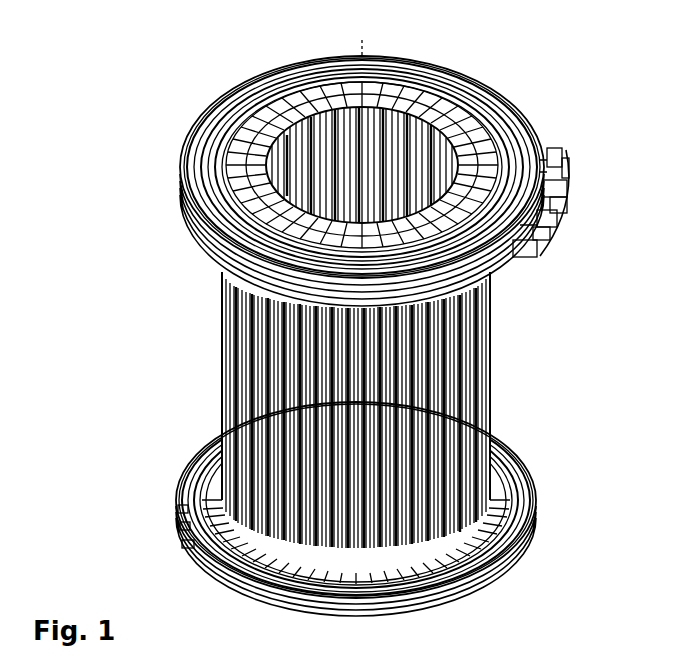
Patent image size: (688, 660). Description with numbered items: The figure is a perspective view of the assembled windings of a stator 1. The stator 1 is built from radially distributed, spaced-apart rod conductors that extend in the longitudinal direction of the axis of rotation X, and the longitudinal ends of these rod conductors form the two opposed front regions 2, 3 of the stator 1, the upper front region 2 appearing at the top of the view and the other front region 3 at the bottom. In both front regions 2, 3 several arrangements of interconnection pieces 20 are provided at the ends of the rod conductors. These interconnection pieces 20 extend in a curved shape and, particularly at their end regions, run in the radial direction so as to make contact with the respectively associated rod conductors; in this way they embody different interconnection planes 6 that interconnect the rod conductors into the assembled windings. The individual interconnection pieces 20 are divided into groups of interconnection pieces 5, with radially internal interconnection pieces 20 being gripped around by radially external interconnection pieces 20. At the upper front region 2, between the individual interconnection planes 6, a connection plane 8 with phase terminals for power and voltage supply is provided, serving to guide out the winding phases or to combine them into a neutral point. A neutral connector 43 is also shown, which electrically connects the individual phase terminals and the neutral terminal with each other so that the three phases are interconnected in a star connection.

The stator 1 is at (68, 39).
The upper front region 2 is at (152, 193).
The front region 3 is at (148, 481).
The groups of interconnection pieces 5 is at (478, 66).
The interconnection planes 6 is at (182, 546).
The connection plane 8 is at (580, 208).
The interconnection pieces 20 is at (192, 113).
The neutral connector 43 is at (553, 238).
The axis of rotation X is at (365, 44).